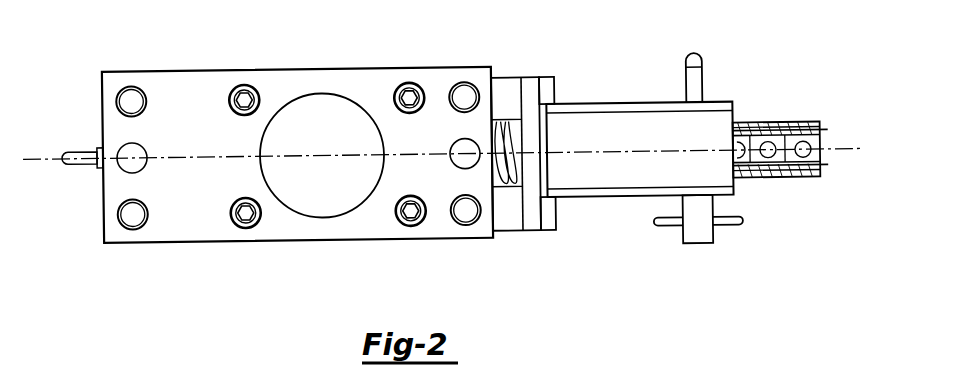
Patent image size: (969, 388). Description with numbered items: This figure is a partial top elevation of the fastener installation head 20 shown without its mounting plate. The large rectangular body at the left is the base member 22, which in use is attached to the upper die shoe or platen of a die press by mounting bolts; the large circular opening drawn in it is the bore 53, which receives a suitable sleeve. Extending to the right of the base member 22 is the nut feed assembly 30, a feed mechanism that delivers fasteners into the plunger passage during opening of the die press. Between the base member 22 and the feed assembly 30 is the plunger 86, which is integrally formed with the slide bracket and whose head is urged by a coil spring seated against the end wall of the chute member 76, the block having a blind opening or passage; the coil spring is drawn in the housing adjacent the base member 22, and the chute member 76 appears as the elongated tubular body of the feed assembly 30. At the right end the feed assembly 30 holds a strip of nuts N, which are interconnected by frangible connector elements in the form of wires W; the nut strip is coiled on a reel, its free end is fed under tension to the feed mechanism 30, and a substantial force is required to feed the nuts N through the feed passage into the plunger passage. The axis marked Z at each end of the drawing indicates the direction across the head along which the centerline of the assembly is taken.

The fastener installation head 20 is at (162, 270).
The base member 22 is at (183, 85).
The bore 53 is at (331, 100).
The plunger 86 is at (511, 128).
The nut feed assembly 30 is at (606, 99).
The chute member 76 is at (613, 187).
The wires W is at (772, 139).
The nut N is at (773, 184).
The Z axis Z is at (51, 169).